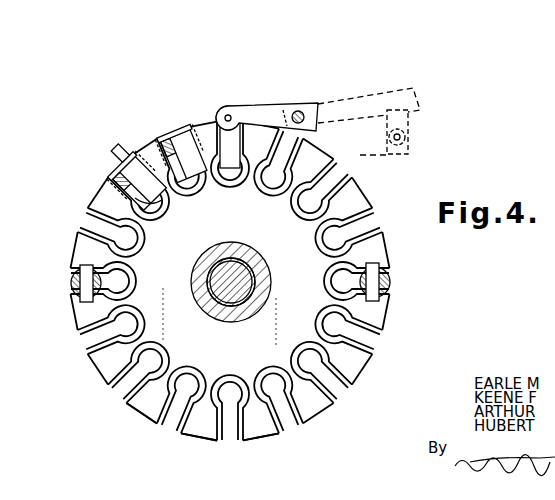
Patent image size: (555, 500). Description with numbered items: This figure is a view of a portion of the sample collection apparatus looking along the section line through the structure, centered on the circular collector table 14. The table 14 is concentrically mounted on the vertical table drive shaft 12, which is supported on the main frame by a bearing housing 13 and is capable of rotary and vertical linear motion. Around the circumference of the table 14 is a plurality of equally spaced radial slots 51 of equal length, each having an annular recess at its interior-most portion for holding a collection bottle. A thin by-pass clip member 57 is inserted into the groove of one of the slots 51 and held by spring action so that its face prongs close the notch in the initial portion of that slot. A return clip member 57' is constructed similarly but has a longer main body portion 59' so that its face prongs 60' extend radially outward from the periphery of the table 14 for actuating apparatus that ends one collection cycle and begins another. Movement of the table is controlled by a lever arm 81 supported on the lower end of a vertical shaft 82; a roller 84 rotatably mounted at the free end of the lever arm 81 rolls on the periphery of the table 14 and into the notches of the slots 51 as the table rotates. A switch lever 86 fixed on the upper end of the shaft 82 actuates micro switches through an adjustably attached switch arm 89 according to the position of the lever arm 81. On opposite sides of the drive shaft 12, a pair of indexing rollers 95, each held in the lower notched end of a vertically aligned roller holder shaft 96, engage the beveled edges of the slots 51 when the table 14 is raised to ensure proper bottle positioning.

The table drive shaft 12 is at (231, 263).
The bearing housing 13 is at (270, 292).
The collector table 14 is at (362, 204).
The radial slots 51 is at (343, 393).
The by-pass clip member 57 is at (171, 146).
The return clip member 57' is at (114, 181).
The main body portion 59' is at (168, 205).
The face prongs 60' is at (110, 147).
The lever arm 81 is at (262, 107).
The vertical shaft 82 is at (299, 111).
The roller 84 is at (219, 113).
The switch lever 86 is at (359, 88).
The switch arm 89 is at (407, 150).
The indexing rollers 95 is at (80, 270).
The roller holder shaft 96 is at (73, 292).